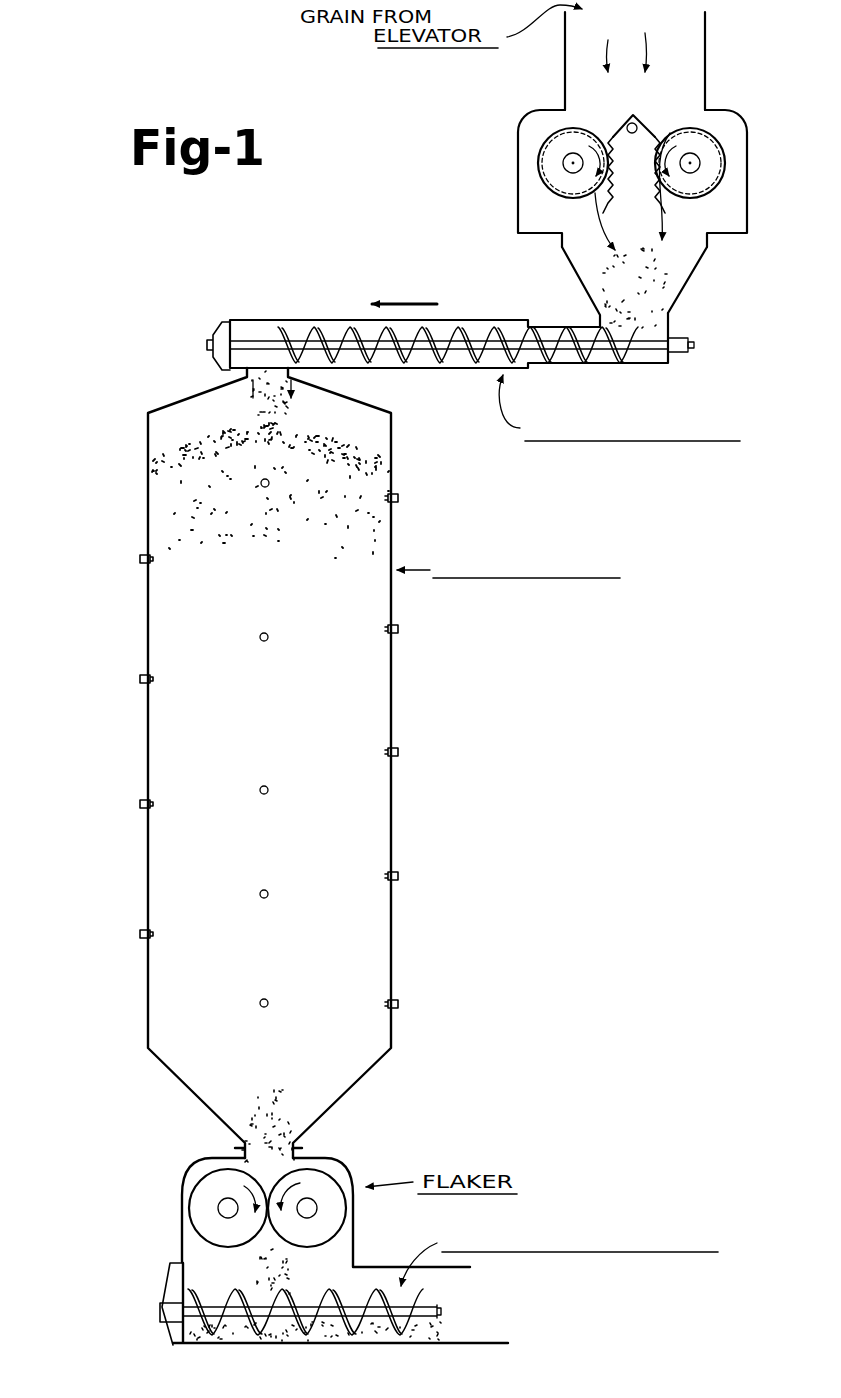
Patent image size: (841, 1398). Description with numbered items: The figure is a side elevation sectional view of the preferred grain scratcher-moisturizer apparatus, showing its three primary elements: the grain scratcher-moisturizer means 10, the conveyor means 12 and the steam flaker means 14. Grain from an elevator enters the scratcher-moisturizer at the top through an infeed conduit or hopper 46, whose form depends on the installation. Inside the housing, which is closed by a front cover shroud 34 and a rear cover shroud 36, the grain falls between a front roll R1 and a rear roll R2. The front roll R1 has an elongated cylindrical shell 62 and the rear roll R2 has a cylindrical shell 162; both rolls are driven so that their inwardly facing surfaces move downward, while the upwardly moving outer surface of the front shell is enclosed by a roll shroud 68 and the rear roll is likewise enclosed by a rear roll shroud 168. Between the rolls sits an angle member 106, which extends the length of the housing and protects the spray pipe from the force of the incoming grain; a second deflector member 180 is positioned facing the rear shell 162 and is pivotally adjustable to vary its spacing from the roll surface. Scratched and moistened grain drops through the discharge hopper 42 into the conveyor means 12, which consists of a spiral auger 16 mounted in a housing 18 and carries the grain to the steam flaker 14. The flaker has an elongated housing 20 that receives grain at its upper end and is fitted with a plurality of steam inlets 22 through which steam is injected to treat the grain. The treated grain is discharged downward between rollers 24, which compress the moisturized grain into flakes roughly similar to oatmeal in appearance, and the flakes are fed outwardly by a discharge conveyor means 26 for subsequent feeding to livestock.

The grain scratcher-moisturizer means 10 is at (490, 128).
The conveyor means 12 is at (384, 273).
The steam flaker means 14 is at (117, 653).
The spiral auger 16 is at (448, 356).
The housing 18 is at (500, 368).
The elongated housing 20 is at (392, 687).
The steam inlets 22 is at (399, 498).
The rollers 24 is at (213, 1182).
The discharge conveyor means 26 is at (312, 1328).
The front cover shroud 34 is at (518, 200).
The rear cover shroud 36 is at (747, 205).
The discharge hopper 42 is at (688, 283).
The infeed conduit or hopper 46 is at (706, 50).
The elongated cylindrical shell 62 is at (550, 170).
The roll shroud 68 is at (555, 123).
The angle member 106 is at (624, 128).
The cylindrical shell 162 is at (713, 153).
The rear roll shroud 168 is at (728, 173).
The second deflector member 180 is at (634, 185).
The front roll R1 is at (590, 190).
The rear roll R2 is at (685, 136).